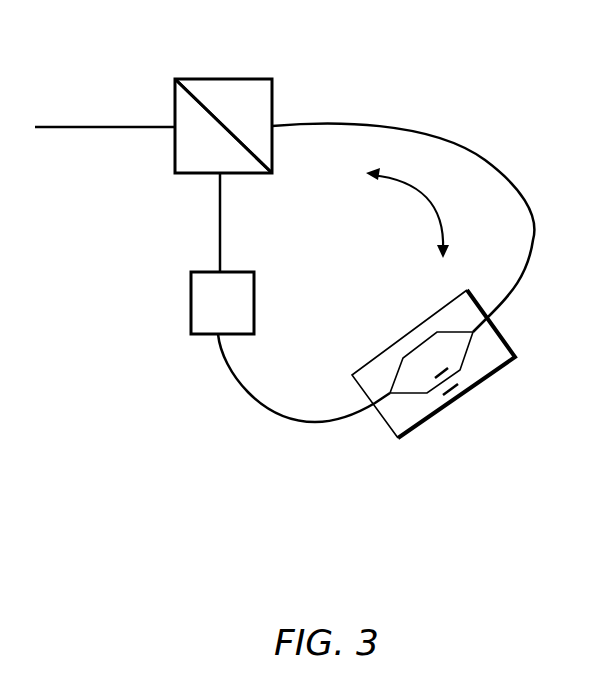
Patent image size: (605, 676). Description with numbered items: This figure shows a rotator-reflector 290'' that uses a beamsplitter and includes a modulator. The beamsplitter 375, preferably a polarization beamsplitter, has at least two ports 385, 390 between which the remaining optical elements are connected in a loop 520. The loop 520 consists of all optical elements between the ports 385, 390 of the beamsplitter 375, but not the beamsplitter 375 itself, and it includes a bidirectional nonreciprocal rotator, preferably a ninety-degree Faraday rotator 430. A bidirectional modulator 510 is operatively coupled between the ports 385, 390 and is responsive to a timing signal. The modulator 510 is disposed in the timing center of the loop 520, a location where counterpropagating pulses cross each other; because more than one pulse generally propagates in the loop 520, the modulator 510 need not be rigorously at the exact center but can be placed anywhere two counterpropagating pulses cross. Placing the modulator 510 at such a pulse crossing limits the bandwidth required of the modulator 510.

The beamsplitter 375 is at (230, 92).
The port 385 is at (223, 126).
The port 390 is at (223, 126).
The 90° Faraday rotator 430 is at (191, 305).
The rotator-reflector 290'' is at (376, 353).
The loop 520 is at (378, 237).
The bidirectional modulator 510 is at (491, 350).